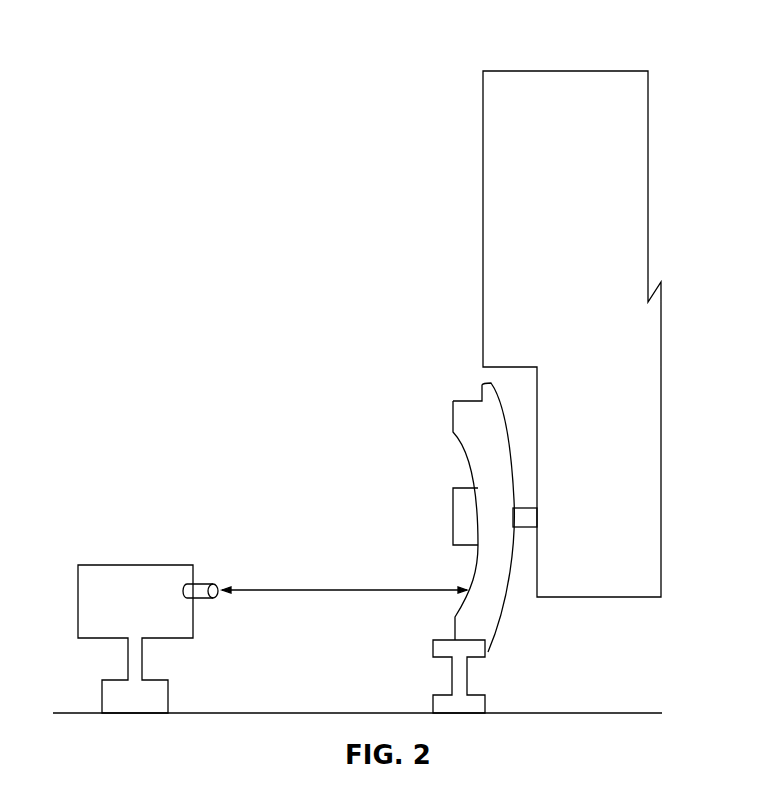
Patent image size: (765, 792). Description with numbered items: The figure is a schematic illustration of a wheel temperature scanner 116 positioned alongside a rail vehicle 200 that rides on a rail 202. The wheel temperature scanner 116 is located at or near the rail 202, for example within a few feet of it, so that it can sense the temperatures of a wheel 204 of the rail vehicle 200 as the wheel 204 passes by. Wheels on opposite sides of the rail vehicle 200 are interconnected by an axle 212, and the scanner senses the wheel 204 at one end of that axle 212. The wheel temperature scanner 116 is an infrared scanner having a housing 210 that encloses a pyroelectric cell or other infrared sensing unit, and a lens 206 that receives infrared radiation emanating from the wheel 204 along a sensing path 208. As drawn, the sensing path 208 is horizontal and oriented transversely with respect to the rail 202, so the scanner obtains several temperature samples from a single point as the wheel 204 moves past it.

The wheel temperature scanner 116 is at (135, 609).
The rail vehicle 200 is at (570, 70).
The rail 202 is at (487, 700).
The wheel 204 is at (465, 400).
The lens 206 is at (200, 583).
The sensing path 208 is at (343, 590).
The housing 210 is at (125, 565).
The axle 212 is at (523, 506).